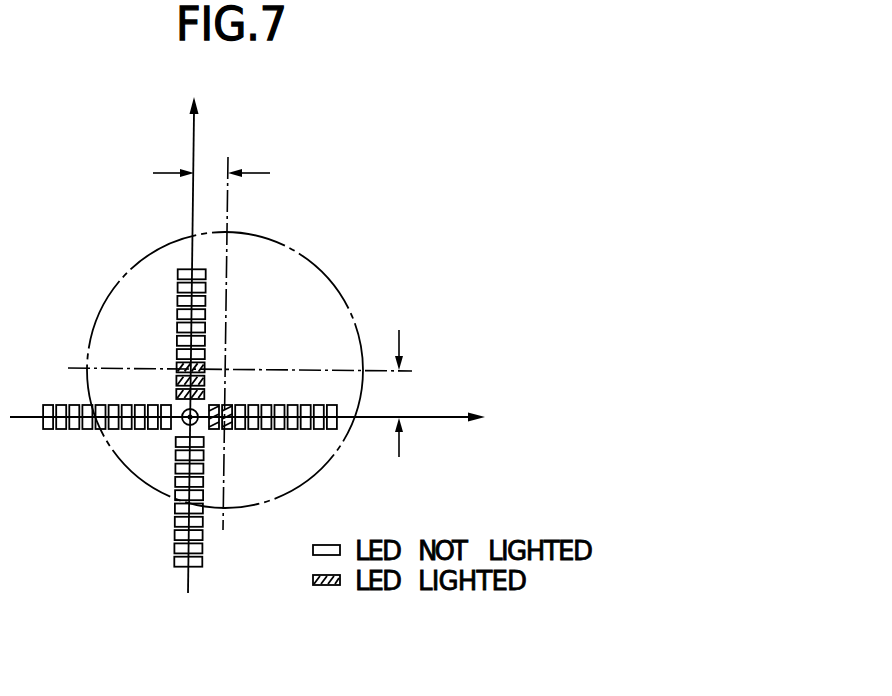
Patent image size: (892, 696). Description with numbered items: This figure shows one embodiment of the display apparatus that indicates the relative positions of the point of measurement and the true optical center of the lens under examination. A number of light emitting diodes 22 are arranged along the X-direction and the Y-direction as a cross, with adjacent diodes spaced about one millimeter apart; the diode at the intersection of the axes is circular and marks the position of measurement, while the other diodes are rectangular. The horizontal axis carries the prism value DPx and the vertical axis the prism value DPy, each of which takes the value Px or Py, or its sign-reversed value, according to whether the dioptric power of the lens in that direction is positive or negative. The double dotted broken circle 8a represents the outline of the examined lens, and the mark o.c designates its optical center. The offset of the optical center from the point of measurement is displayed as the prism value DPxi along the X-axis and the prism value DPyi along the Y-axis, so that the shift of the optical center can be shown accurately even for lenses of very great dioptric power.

The display area (detection region) of position detecting device 8a is at (96, 492).
The light emitting diodes 22 is at (178, 317).
The prism value DPx is at (252, 436).
The prism value DPy is at (166, 344).
The prism value DPxi is at (211, 330).
The prism value DPyi is at (253, 393).
The optical center o.c is at (229, 367).